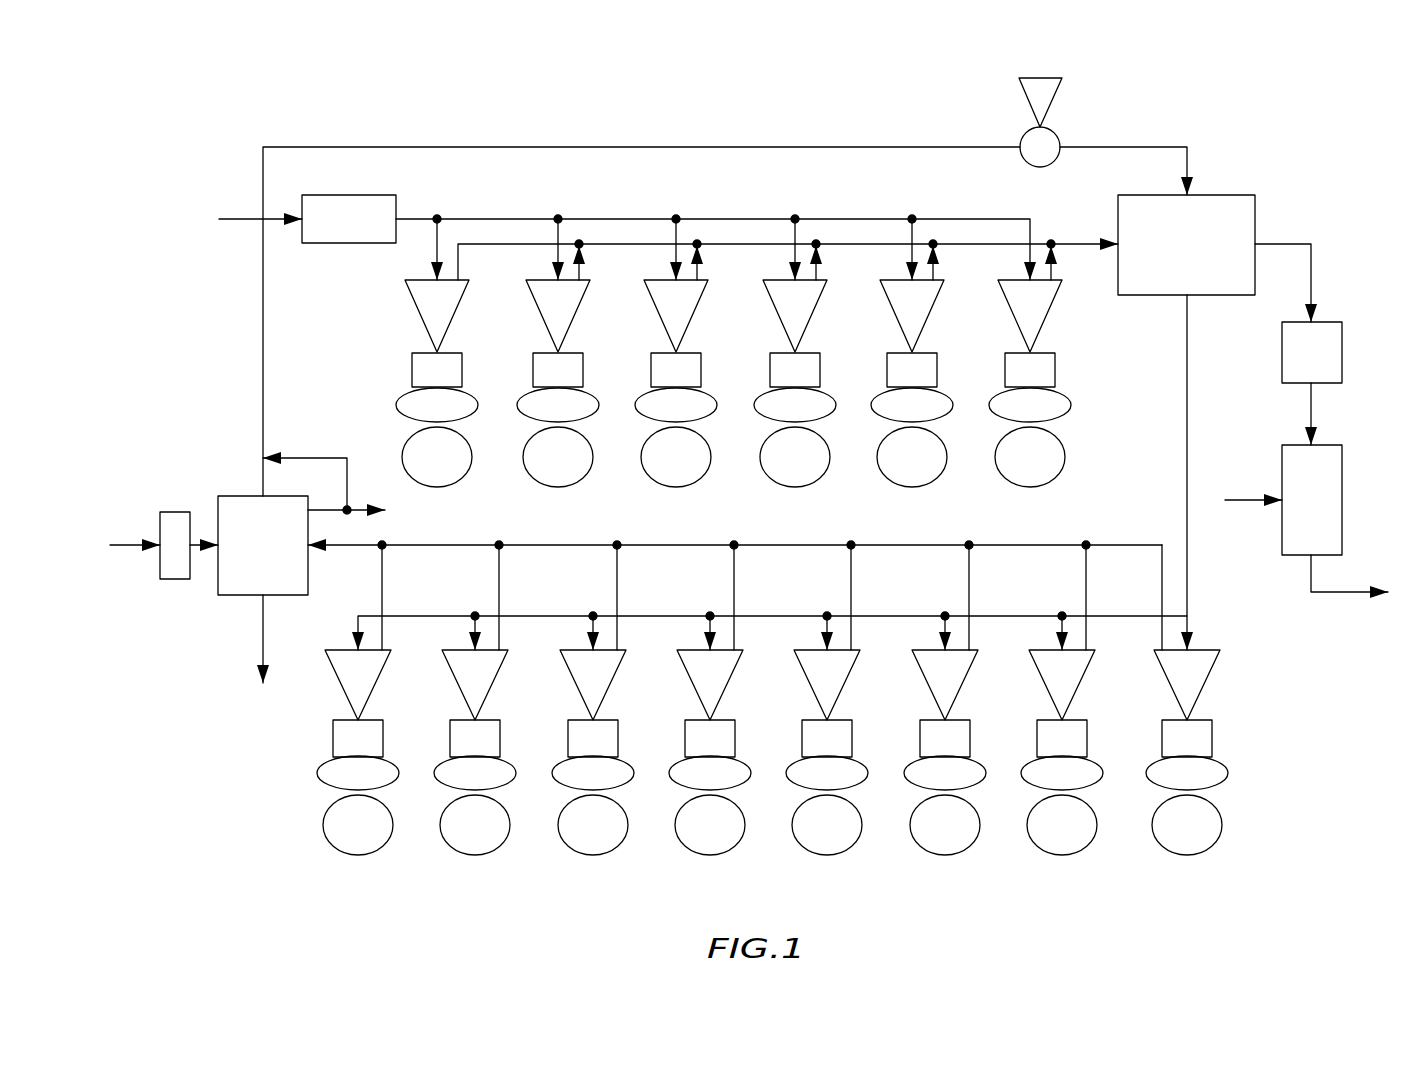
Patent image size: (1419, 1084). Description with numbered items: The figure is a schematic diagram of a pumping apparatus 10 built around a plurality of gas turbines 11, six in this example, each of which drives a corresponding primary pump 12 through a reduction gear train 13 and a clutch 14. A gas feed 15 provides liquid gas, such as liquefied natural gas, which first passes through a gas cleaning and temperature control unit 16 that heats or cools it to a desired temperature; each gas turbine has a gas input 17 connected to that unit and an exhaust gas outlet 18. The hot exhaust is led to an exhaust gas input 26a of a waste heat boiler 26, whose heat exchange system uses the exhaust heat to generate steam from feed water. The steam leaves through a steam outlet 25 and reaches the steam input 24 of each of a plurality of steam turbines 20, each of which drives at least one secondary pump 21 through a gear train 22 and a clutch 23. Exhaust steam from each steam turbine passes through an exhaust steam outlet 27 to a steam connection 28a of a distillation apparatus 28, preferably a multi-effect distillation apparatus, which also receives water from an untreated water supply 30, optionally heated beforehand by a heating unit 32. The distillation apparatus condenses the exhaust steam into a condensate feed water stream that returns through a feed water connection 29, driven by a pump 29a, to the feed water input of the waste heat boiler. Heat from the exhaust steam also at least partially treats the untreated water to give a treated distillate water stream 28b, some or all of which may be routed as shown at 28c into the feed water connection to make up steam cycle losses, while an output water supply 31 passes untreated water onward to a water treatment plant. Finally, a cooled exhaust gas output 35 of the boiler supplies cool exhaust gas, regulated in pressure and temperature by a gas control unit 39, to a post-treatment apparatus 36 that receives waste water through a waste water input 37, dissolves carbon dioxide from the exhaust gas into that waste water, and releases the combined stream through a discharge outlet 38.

The pumping apparatus 10 is at (1355, 97).
The gas turbine 11 is at (419, 306).
The primary pump 12 is at (410, 447).
The reduction gear train 13 is at (419, 376).
The clutch 14 is at (412, 400).
The gas feed 15 is at (240, 218).
The gas cleaning and temperature control unit 16 is at (343, 238).
The gas input 17 is at (436, 242).
The exhaust gas outlet 18 is at (582, 277).
The steam turbine 20 is at (336, 676).
The secondary pump 21 is at (335, 820).
The gear train 22 is at (340, 738).
The clutch 23 is at (322, 768).
The steam input 24 is at (355, 632).
The steam outlet 25 is at (1188, 323).
The waste heat boiler 26 is at (1230, 205).
The exhaust gas input 26a is at (1072, 244).
The exhaust steam outlet 27 is at (383, 585).
The distillation apparatus 28 is at (250, 496).
The steam connection 28a is at (358, 552).
The treated distillate water stream 28b is at (380, 514).
The treated water supply to feed water connection 28c is at (300, 458).
The feed water connection 29 is at (548, 147).
The pump 29a is at (1027, 103).
The untreated water supply 30 is at (112, 550).
The output water supply 31 is at (262, 640).
The heating unit 32 is at (175, 512).
The cooled exhaust gas output 35 is at (1312, 260).
The post-treatment apparatus 36 is at (1290, 538).
The waste water input 37 is at (1240, 500).
The discharge outlet 38 is at (1342, 591).
The gas control unit 39 is at (1288, 363).